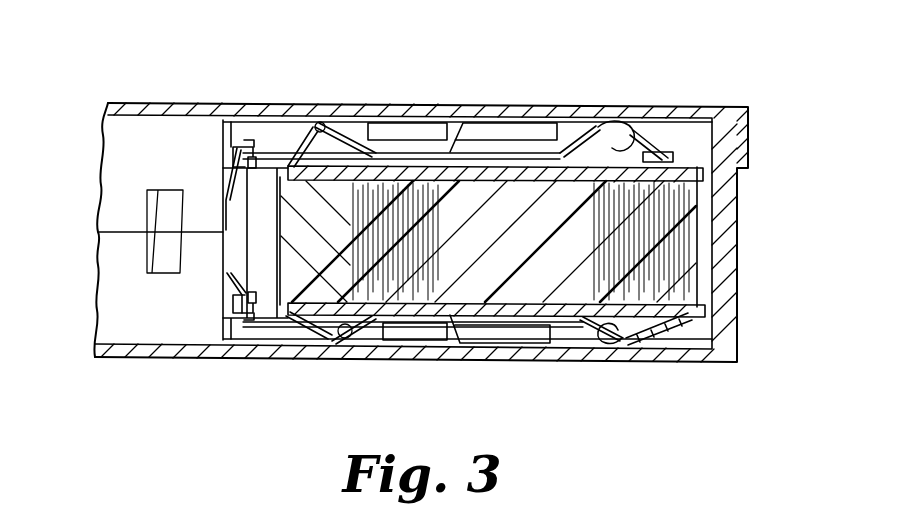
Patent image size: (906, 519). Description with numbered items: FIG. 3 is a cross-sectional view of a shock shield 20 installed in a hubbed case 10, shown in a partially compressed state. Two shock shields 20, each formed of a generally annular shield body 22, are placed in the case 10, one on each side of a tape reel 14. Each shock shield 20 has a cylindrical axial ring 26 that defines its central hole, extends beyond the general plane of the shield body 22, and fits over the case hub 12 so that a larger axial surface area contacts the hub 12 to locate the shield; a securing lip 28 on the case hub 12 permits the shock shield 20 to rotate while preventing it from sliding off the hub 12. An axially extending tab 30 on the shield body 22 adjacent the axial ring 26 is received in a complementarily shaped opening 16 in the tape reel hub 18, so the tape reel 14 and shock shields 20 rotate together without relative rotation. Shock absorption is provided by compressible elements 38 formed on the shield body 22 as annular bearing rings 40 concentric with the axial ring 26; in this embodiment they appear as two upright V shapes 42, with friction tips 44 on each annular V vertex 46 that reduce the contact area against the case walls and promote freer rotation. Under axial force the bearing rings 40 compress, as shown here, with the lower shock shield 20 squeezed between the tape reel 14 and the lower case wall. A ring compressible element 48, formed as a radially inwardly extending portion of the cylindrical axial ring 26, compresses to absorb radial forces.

The hubbed case 10 is at (147, 376).
The case hub 12 is at (104, 255).
The tape reel 14 is at (672, 265).
The opening 16 is at (268, 175).
The tape reel hub 18 is at (285, 175).
The shock shield 20 is at (374, 128).
The shield body 22 is at (492, 122).
The cylindrical axial ring 26 is at (230, 150).
The securing lip 28 is at (224, 200).
The axially extending tab 30 is at (251, 146).
The compressible elements 38 is at (668, 150).
The annular bearing rings 40 is at (570, 118).
The upright V shapes 42 is at (357, 135).
The friction tips 44 is at (612, 122).
The annular V vertex 46 is at (638, 125).
The ring compressible element 48 is at (222, 270).